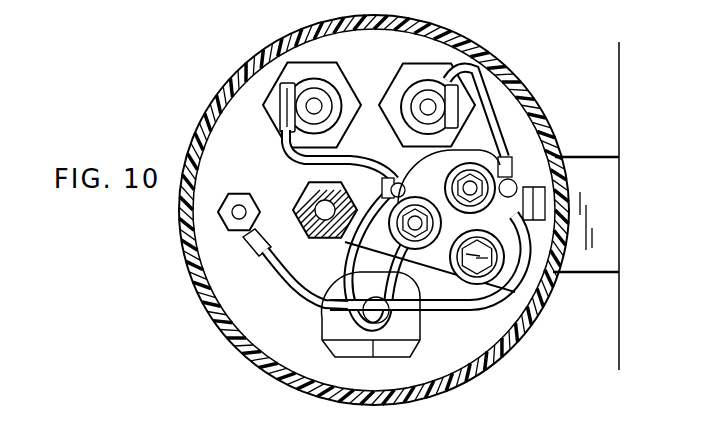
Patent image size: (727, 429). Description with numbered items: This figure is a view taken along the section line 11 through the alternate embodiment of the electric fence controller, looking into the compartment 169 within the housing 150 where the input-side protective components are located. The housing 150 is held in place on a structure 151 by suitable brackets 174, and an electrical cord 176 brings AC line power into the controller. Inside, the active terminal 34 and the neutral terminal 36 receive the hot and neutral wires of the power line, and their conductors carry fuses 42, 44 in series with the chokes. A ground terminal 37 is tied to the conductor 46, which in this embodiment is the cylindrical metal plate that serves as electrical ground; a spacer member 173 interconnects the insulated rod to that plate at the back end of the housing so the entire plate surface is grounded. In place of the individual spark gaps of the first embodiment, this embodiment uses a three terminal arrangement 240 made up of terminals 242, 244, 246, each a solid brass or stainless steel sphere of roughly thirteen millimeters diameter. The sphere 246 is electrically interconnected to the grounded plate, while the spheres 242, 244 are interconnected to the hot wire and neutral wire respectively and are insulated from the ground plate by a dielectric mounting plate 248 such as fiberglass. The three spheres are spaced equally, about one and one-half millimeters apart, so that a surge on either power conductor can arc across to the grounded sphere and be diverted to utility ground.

The fluid conduit / hose 11 is at (318, 276).
The active terminal 34 is at (414, 224).
The neutral terminal 36 is at (470, 188).
The ground terminal 37 is at (237, 232).
The fuse 42 is at (305, 75).
The fuse 44 is at (432, 80).
The conductor 46 is at (266, 331).
The housing 150 is at (485, 382).
The structure 151 is at (617, 344).
The compartment 169 is at (236, 137).
The spacer member 173 is at (312, 200).
The bracket 174 is at (600, 222).
The electrical cord 176 is at (371, 329).
The three terminal arrangement 240 is at (490, 326).
The terminal 242 is at (475, 160).
The terminal 244 is at (348, 228).
The terminal 246 is at (500, 284).
The dielectric mounting plate 248 is at (444, 262).